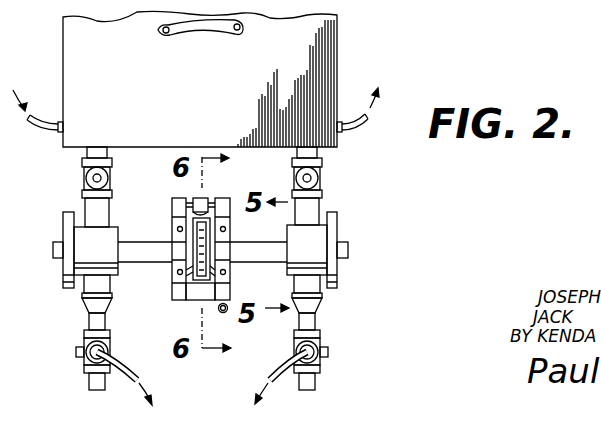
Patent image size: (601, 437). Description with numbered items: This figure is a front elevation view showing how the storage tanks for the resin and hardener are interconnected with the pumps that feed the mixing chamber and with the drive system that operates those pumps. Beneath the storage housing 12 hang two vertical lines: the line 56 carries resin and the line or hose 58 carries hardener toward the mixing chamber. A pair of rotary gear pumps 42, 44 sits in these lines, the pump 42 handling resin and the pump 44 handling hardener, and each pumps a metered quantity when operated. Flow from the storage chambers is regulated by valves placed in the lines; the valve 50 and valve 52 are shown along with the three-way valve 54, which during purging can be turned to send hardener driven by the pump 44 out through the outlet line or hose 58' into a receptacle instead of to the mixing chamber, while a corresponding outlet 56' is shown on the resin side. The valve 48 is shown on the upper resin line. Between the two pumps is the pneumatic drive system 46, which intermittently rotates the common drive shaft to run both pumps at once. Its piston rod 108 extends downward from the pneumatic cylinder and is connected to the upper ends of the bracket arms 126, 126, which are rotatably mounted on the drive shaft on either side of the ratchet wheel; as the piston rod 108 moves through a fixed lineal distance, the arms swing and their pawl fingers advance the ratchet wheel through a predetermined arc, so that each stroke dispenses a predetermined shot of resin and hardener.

The container 12 is at (343, 65).
The rotary gear pump 42 is at (122, 224).
The rotary gear pump 44 is at (340, 232).
The pneumatic drive system 46 is at (218, 192).
The left upper valve 48 is at (82, 178).
The valve 50 is at (82, 360).
The valve 52 is at (322, 178).
The three-way valve 54 is at (319, 346).
The line 56 is at (127, 360).
The left outlet 56' is at (64, 396).
The line or hose 58 is at (264, 378).
The outlet line or hose 58' is at (348, 378).
The piston rod 108 is at (194, 200).
The bracket arm 126 is at (178, 288).